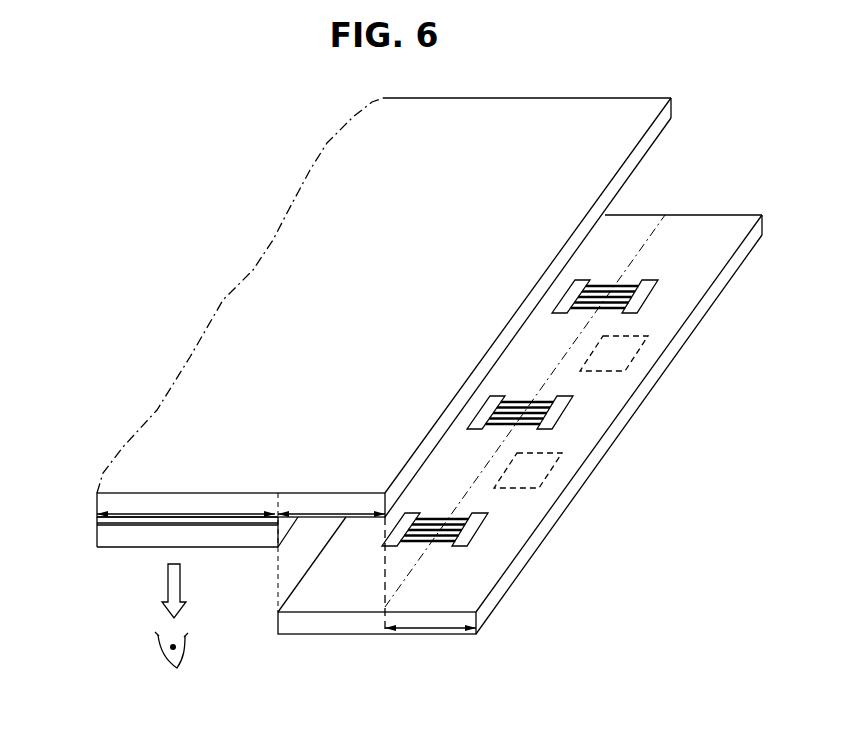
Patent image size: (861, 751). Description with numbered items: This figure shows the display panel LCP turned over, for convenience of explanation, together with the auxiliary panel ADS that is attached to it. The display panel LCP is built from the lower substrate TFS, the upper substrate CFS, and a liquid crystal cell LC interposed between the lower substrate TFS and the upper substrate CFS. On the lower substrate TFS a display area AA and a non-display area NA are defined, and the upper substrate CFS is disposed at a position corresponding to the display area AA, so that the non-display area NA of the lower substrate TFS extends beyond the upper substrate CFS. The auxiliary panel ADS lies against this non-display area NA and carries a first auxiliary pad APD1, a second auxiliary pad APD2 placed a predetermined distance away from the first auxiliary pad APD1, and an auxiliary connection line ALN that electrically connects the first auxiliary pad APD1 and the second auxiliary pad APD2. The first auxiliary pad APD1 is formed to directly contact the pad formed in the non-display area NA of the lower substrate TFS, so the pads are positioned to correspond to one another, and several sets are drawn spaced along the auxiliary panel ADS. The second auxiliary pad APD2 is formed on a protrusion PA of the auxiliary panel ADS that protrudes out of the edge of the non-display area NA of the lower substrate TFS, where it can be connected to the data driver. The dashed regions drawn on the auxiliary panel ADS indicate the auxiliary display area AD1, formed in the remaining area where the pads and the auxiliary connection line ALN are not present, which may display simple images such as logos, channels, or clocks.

The lower substrate TFS is at (97, 501).
The display panel LCP is at (336, 324).
The liquid crystal cell LC is at (97, 520).
The upper substrate CFS is at (97, 538).
The display area AA is at (186, 506).
The non-display area NA is at (331, 506).
The protrusion PA is at (430, 621).
The auxiliary panel ADS is at (594, 470).
The first active retarder electrode AD1 is at (553, 469).
The first auxiliary pad APD1 is at (389, 546).
The auxiliary connection line ALN is at (425, 541).
The second auxiliary pad APD2 is at (462, 546).